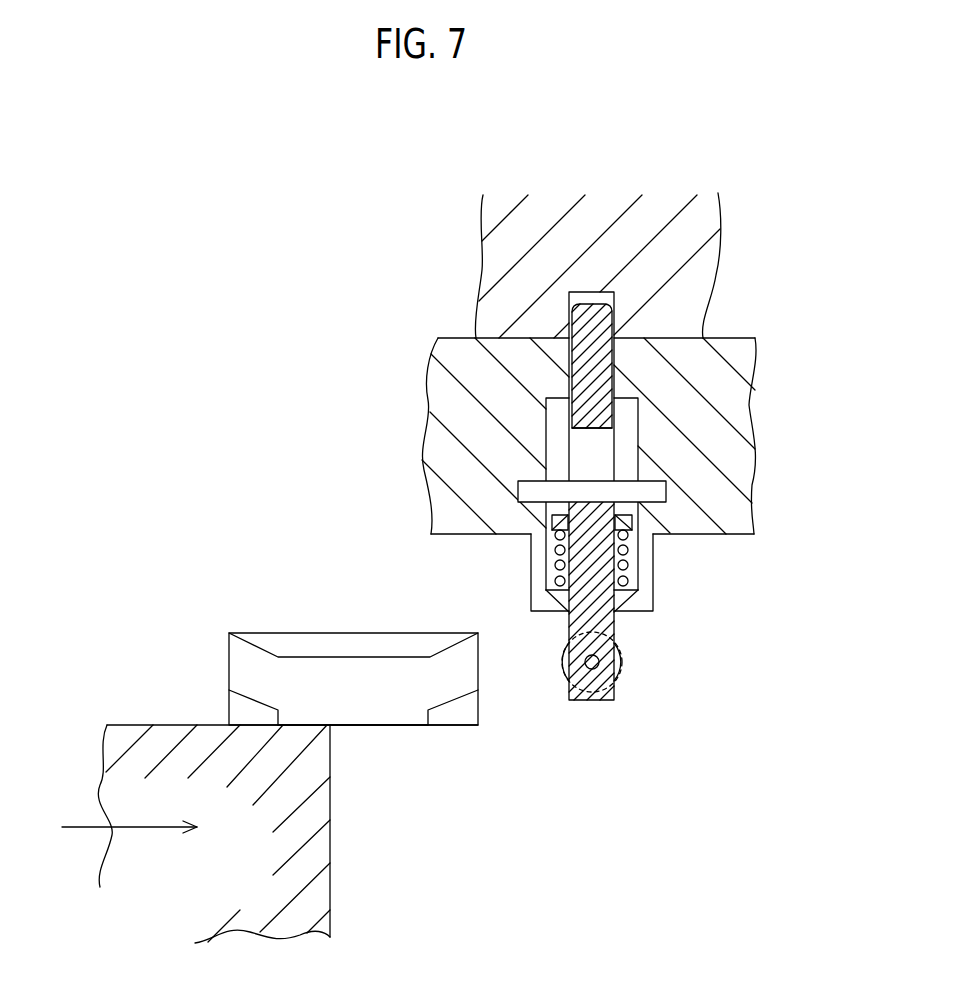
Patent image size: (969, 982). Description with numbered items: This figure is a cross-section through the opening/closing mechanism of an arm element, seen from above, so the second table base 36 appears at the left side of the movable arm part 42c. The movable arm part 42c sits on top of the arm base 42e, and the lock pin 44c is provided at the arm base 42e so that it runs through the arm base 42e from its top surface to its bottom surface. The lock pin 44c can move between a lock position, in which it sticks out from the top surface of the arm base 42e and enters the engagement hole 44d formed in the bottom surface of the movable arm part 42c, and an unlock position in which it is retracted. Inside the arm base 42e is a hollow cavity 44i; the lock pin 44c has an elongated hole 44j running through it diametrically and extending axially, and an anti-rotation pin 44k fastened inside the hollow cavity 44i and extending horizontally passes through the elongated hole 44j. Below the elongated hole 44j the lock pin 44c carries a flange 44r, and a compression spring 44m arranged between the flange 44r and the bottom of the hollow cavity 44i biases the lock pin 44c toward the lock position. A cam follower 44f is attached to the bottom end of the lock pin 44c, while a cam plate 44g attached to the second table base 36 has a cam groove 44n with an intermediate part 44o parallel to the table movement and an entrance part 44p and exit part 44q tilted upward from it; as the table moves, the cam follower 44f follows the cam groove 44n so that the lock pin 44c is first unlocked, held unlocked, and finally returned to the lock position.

The second table base 36 is at (133, 770).
The movable arm part 42c is at (680, 243).
The arm base 42e is at (448, 382).
The lock pin 44c is at (590, 342).
The engagement hole of the opened position 44d is at (614, 305).
The cam follower 44f is at (621, 662).
The cam plate 44g is at (302, 645).
The hollow cavity 44i is at (637, 462).
The elongated hole 44j is at (587, 428).
The anti-rotation pin 44k is at (648, 492).
The compression spring 44m is at (556, 565).
The cam groove 44n is at (358, 698).
The intermediate part 44o is at (367, 660).
The entrance part 44p is at (452, 643).
The exit part 44q is at (243, 705).
The flange 44r is at (617, 520).